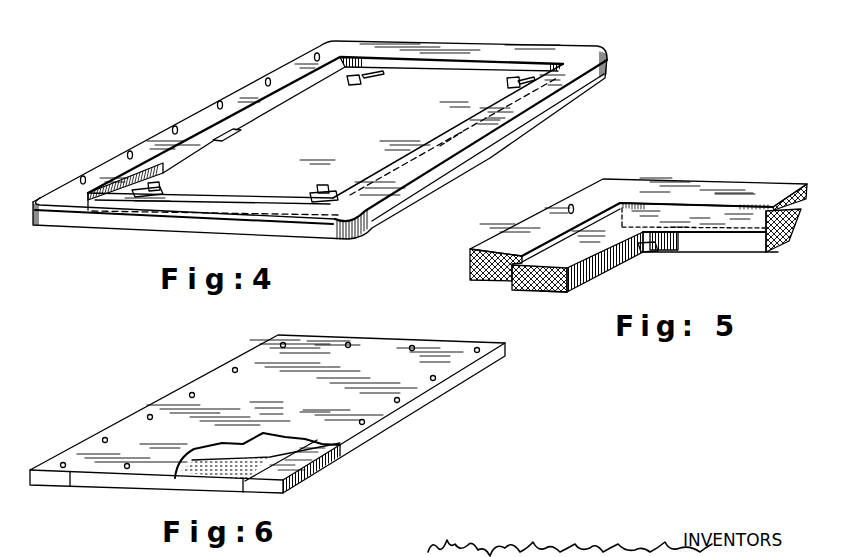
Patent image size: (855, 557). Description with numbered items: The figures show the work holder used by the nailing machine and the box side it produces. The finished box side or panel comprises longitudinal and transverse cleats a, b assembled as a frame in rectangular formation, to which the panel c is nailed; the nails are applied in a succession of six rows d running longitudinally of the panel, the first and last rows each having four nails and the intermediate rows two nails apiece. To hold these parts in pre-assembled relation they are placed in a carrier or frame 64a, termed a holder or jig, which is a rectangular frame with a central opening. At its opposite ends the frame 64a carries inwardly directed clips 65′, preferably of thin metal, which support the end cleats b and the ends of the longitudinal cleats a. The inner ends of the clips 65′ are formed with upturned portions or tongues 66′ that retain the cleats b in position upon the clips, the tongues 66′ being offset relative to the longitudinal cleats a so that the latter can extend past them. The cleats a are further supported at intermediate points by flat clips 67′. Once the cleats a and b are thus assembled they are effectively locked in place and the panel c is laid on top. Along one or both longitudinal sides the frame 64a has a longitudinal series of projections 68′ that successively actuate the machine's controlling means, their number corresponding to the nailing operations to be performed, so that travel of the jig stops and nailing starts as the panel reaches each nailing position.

In FIG. 4, the carrier or frame 64a is at (431, 43).
In FIG. 5, the carrier or frame 64a is at (625, 178).
In FIG. 4, the clips 65′ is at (152, 184).
In FIG. 5, the clips 65′ is at (672, 251).
In FIG. 4, the tongues 66′ is at (164, 184).
In FIG. 5, the tongues 66′ is at (644, 252).
In FIG. 4, the flat clips 67′ is at (226, 140).
In FIG. 4, the projections 68′ is at (83, 176).
In FIG. 5, the projections 68′ is at (571, 204).
In FIG. 5, the longitudinal cleats a is at (576, 286).
In FIG. 6, the longitudinal cleats a is at (44, 482).
In FIG. 5, the transverse cleats b is at (778, 240).
In FIG. 6, the transverse cleats b is at (148, 486).
In FIG. 6, the panel c is at (376, 348).
In FIG. 6, the rows of nails d is at (194, 393).